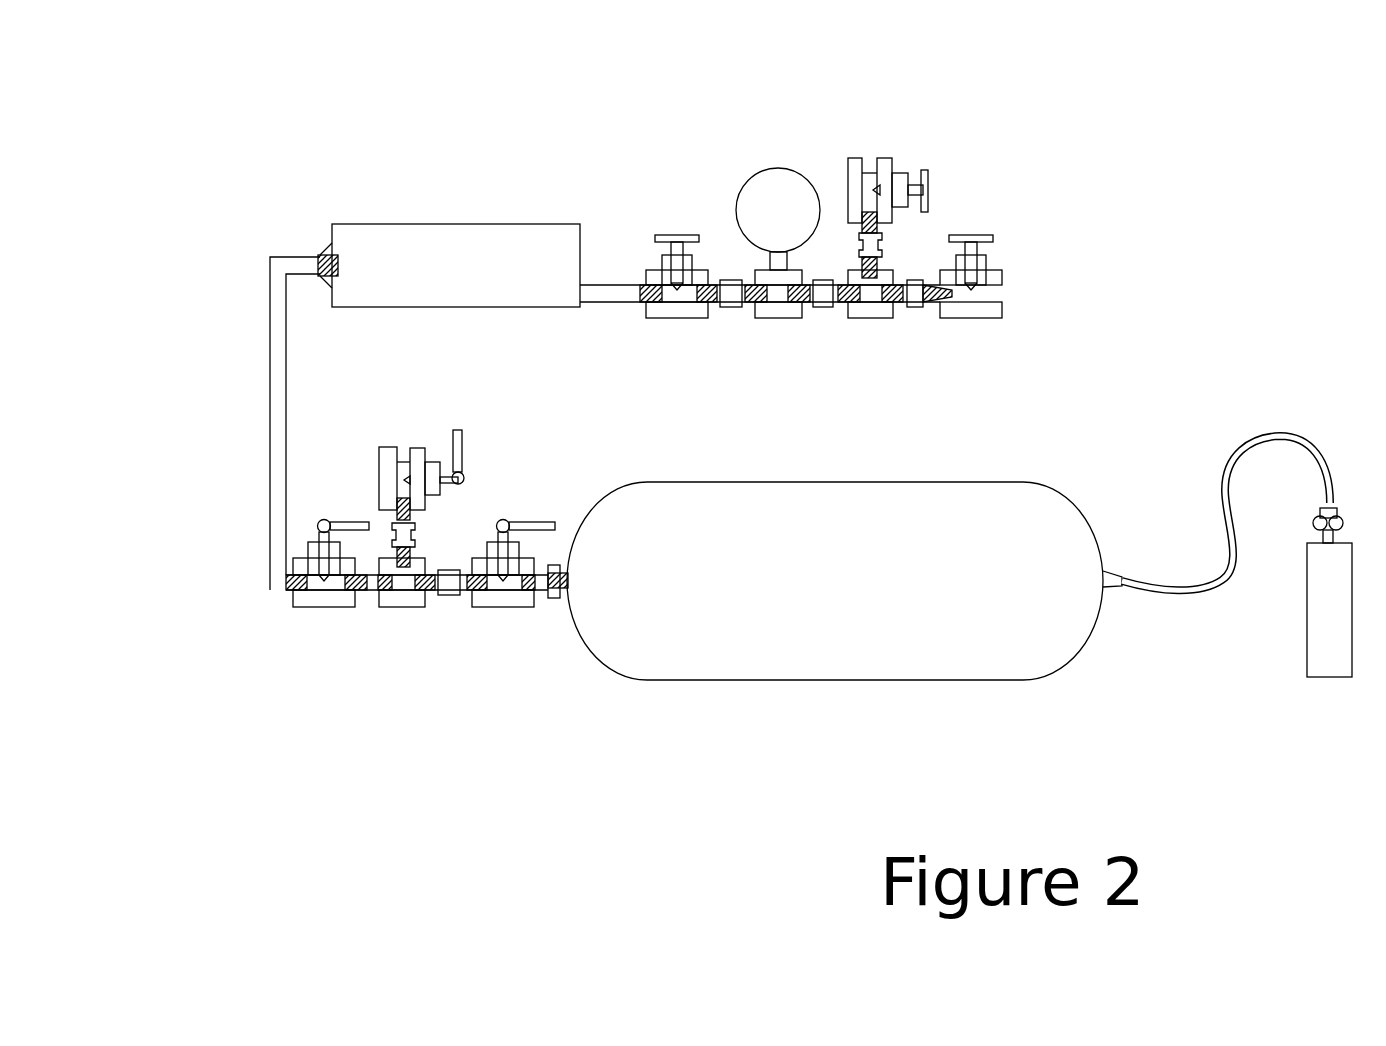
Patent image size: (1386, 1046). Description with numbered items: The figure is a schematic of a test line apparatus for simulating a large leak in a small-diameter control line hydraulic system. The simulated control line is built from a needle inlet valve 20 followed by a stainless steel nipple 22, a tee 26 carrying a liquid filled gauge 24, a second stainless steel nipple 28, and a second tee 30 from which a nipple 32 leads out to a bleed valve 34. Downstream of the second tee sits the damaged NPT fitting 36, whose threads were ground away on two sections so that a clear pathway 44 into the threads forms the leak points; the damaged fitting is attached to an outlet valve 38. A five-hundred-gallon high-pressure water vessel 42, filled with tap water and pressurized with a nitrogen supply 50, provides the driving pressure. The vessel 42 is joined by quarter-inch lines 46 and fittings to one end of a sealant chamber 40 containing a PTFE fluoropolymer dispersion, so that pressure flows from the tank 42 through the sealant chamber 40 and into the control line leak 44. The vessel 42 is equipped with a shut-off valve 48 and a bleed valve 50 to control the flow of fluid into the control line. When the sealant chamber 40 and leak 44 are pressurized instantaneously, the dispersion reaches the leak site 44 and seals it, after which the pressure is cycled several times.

The needle inlet valve 20 is at (677, 240).
The stainless steel nipple 22 is at (740, 305).
The liquid filled gauge 24 is at (775, 178).
The tee 26 is at (790, 316).
The stainless steel nipple 28 is at (826, 287).
The tee 30 is at (887, 307).
The nipple 32 is at (862, 247).
The bleed valve 34 is at (928, 192).
The NPT fitting 36 is at (921, 300).
The outlet valve 38 is at (1000, 238).
The sealant chamber 40 is at (407, 262).
The high-pressure water vessel 42 is at (777, 663).
The pathway 44 is at (940, 288).
The lines 46 is at (272, 549).
The shut-off valve 48 is at (507, 600).
The nitrogen supply 50 is at (1320, 653).